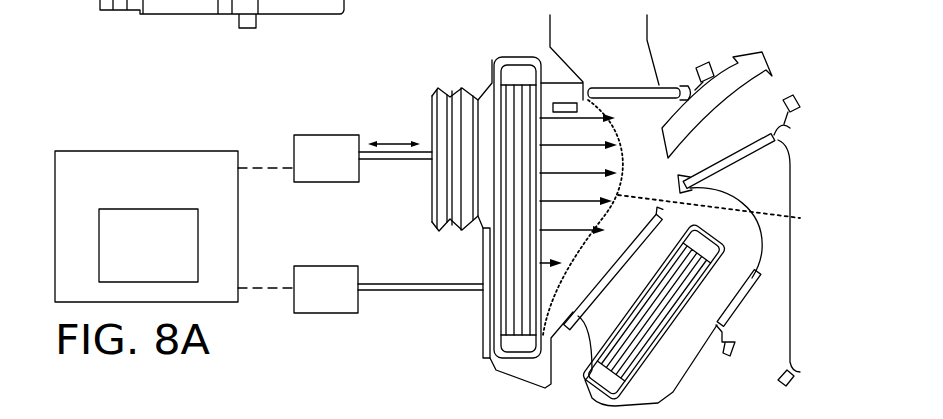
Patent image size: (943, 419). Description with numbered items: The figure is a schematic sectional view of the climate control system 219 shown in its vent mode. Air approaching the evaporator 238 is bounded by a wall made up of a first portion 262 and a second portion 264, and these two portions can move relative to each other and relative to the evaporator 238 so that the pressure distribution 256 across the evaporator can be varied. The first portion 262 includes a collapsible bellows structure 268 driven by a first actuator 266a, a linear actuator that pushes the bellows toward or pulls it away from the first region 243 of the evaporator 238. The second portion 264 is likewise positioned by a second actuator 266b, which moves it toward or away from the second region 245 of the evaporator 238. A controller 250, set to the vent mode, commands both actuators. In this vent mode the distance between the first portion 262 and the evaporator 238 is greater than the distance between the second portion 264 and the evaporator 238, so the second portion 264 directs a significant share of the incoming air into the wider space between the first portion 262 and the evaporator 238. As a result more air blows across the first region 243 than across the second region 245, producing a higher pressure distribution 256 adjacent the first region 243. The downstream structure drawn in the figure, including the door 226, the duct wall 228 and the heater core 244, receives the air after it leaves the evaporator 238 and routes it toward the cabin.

The climate control system 219 is at (230, 97).
The controller 250 is at (108, 151).
The first actuator 266a is at (330, 134).
The second actuator 266b is at (330, 265).
The first portion 262 is at (432, 123).
The collapsible bellows structure 268 is at (458, 228).
The second portion 264 is at (483, 301).
The evaporator 238 is at (510, 112).
The first region 243 is at (515, 150).
The second region 245 is at (513, 295).
The pressure distribution 256 is at (718, 149).
The cabin door 226 is at (792, 125).
The duct wall 228 is at (795, 368).
The heater core 244 is at (630, 355).